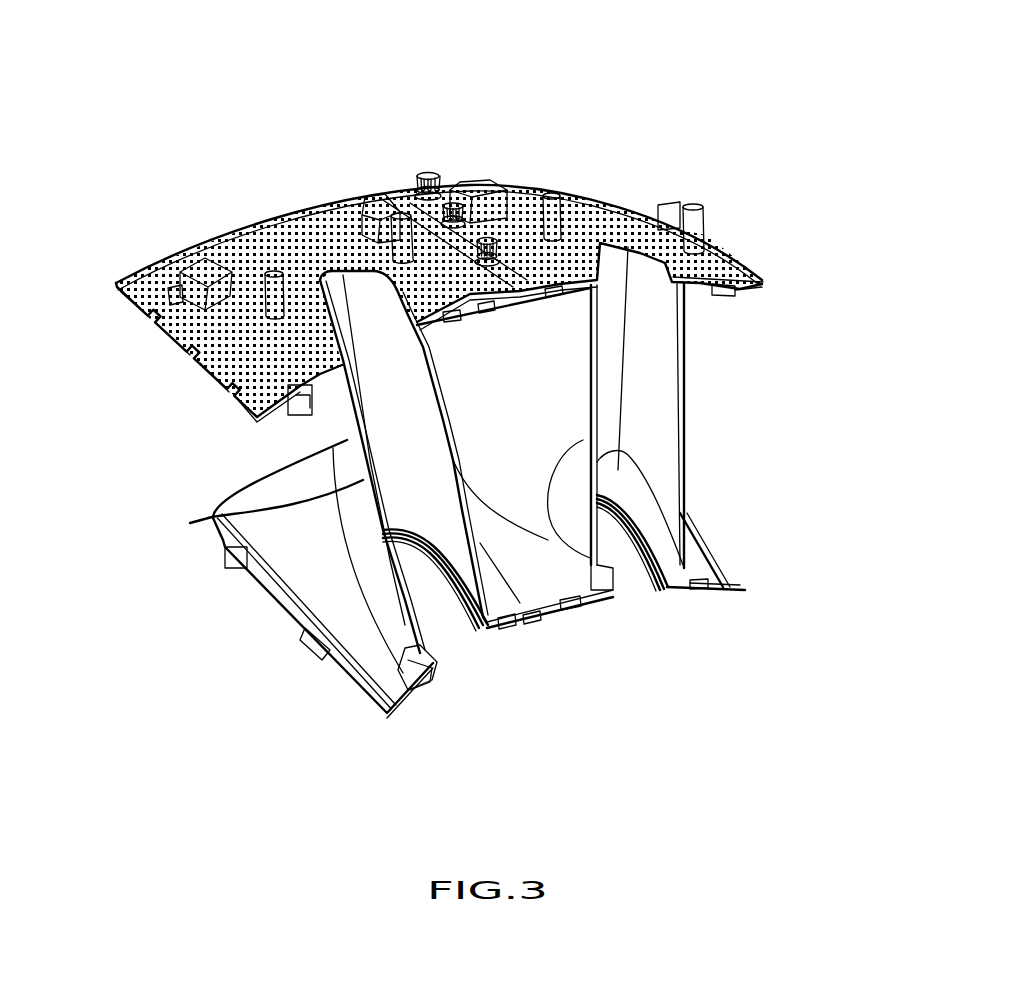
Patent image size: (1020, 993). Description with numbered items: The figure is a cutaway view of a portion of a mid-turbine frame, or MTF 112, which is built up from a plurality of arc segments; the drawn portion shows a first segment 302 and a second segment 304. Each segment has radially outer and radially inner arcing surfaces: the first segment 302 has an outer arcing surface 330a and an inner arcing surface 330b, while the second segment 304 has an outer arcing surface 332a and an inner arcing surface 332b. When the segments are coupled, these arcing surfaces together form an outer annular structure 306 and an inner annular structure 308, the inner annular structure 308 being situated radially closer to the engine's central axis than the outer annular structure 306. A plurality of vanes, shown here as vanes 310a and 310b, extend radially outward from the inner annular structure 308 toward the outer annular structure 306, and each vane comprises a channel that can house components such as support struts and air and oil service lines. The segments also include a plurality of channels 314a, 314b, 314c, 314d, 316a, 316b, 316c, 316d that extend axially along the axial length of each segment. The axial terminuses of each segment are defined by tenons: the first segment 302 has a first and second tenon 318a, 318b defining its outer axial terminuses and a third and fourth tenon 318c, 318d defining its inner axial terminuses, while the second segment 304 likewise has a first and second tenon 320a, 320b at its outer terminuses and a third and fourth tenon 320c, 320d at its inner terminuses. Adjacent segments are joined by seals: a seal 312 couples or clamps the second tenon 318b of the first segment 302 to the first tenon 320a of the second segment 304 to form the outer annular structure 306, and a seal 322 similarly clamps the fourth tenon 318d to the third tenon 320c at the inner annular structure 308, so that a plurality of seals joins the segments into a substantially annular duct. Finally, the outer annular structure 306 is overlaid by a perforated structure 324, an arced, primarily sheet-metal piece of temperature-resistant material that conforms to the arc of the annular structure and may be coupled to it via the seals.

The MTF 112 is at (171, 36).
The first segment 302 is at (291, 196).
The second segment 304 is at (603, 202).
The outer annular structure 306 is at (508, 176).
The inner annular structure 308 is at (280, 610).
The vane 310a is at (190, 523).
The vane 310b is at (683, 440).
The seal 312 is at (402, 162).
The channel 314a is at (303, 383).
The channel 314b is at (452, 310).
The channel 314c is at (417, 687).
The channel 314d is at (508, 626).
The channel 316a is at (553, 289).
The channel 316b is at (723, 293).
The channel 316c is at (570, 606).
The channel 316d is at (700, 596).
The first tenon 318a is at (303, 400).
The second tenon 318b is at (484, 306).
The third tenon 318c is at (360, 660).
The fourth tenon 318d is at (532, 615).
The first tenon 320a is at (518, 303).
The second tenon 320b is at (753, 290).
The third tenon 320c is at (583, 612).
The fourth tenon 320d is at (707, 590).
The seal 322 is at (507, 547).
The perforated structure 324 is at (232, 233).
The outer arcing surface 330a is at (122, 268).
The inner arcing surface 330b is at (387, 713).
The outer arcing surface 332a is at (727, 255).
The inner arcing surface 332b is at (707, 590).